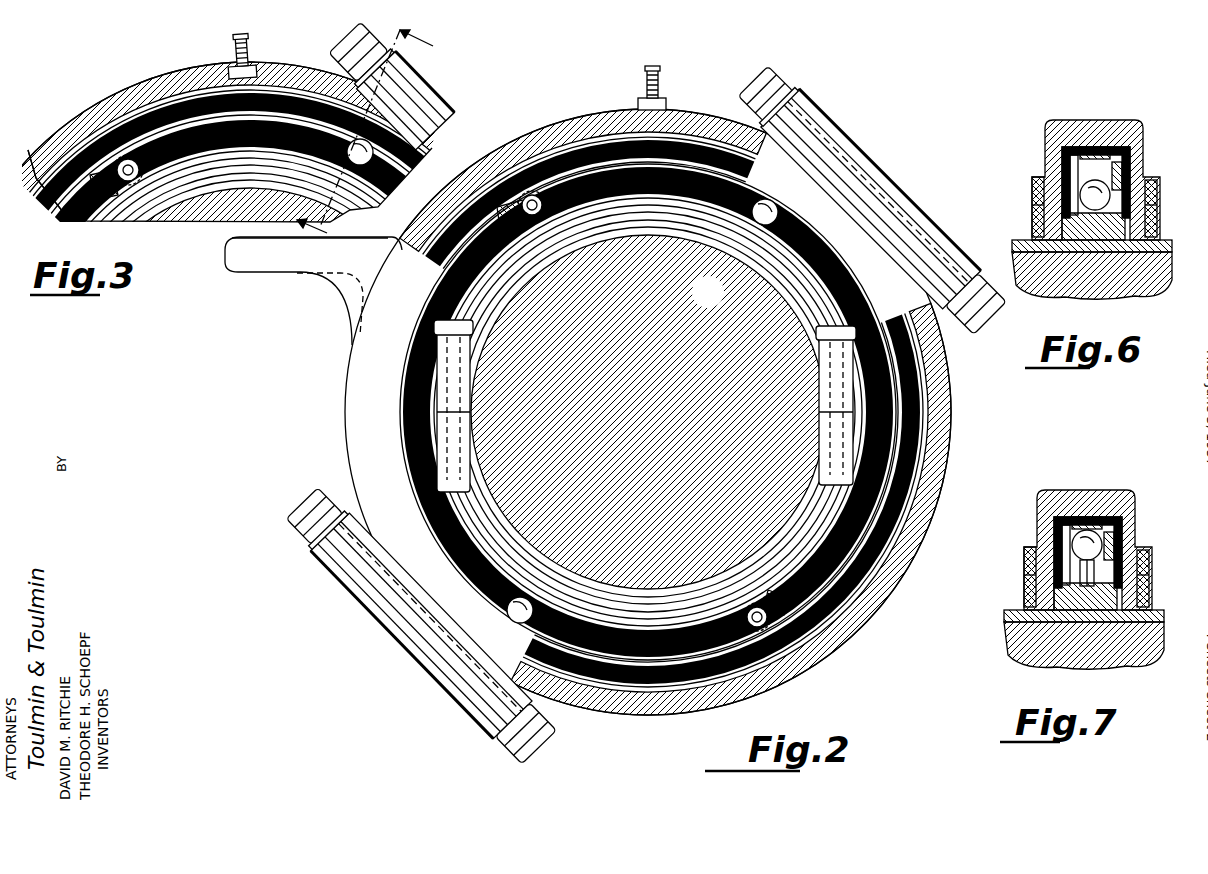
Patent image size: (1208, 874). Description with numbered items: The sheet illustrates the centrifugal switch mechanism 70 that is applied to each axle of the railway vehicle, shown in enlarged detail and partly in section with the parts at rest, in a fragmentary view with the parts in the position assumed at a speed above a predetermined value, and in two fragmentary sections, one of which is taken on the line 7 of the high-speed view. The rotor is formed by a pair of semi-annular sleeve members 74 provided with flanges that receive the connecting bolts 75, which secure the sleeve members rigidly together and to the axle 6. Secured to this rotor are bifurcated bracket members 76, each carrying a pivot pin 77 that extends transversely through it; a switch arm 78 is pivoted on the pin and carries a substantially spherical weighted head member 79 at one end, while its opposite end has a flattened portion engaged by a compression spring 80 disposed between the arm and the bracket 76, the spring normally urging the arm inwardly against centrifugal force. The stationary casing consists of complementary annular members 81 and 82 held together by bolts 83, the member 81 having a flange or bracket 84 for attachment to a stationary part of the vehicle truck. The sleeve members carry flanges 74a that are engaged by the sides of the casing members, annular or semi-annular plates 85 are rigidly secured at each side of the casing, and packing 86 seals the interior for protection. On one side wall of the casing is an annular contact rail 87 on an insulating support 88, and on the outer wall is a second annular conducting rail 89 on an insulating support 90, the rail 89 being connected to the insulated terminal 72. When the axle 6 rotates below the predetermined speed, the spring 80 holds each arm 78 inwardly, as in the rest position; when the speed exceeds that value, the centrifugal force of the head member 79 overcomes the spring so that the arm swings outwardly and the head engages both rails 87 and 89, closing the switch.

In FIG. 2, the axle 6 is at (724, 272).
In FIG. 3, the axle 6 is at (210, 220).
In FIG. 6, the axle 6 is at (1145, 290).
In FIG. 7, the axle 6 is at (1084, 659).
In FIG. 3, the section line 7— 7 is at (357, 124).
In FIG. 2, the centrifugal switch mechanism 70 is at (566, 108).
In FIG. 2, the terminal 72 is at (660, 86).
In FIG. 3, the terminal 72 is at (252, 50).
In FIG. 2, the semi-annular sleeve members 74 is at (880, 240).
In FIG. 3, the semi-annular sleeve members 74 is at (148, 200).
In FIG. 6, the semi-annular sleeve members 74 is at (1158, 243).
In FIG. 7, the semi-annular sleeve members 74 is at (1120, 594).
In FIG. 6, the flanges 74a is at (1040, 243).
In FIG. 7, the flanges 74a is at (1064, 622).
In FIG. 2, the connecting bolts 75 is at (436, 332).
In FIG. 2, the bifurcated bracket members 76 is at (477, 222).
In FIG. 3, the bifurcated bracket members 76 is at (85, 214).
In FIG. 2, the pivot pin 77 is at (520, 205).
In FIG. 3, the pivot pin 77 is at (128, 158).
In FIG. 2, the switch arm 78 is at (600, 180).
In FIG. 3, the switch arm 78 is at (190, 130).
In FIG. 7, the switch arm 78 is at (1036, 573).
In FIG. 2, the weighted head member 79 is at (760, 198).
In FIG. 3, the weighted head member 79 is at (380, 200).
In FIG. 6, the weighted head member 79 is at (1080, 185).
In FIG. 7, the weighted head member 79 is at (1052, 536).
In FIG. 2, the compression spring 80 is at (528, 198).
In FIG. 3, the compression spring 80 is at (115, 163).
In FIG. 2, the annular casing member 81 is at (360, 392).
In FIG. 3, the annular casing member 81 is at (64, 152).
In FIG. 6, the annular casing member 81 is at (1115, 120).
In FIG. 7, the annular casing member 81 is at (1088, 533).
In FIG. 2, the annular casing member 82 is at (608, 712).
In FIG. 3, the annular casing member 82 is at (145, 92).
In FIG. 2, the bolts 83 is at (790, 88).
In FIG. 3, the bolts 83 is at (372, 55).
In FIG. 2, the flange or bracket 84 is at (270, 273).
In FIG. 6, the annular plates 85 is at (1032, 200).
In FIG. 7, the annular plates 85 is at (1080, 579).
In FIG. 6, the packing 86 is at (1032, 218).
In FIG. 7, the packing 86 is at (1080, 581).
In FIG. 2, the annular contact rail 87 is at (890, 482).
In FIG. 3, the annular contact rail 87 is at (396, 176).
In FIG. 6, the annular contact rail 87 is at (1128, 170).
In FIG. 7, the annular contact rail 87 is at (1117, 545).
In FIG. 2, the insulating support 88 is at (905, 457).
In FIG. 3, the insulating support 88 is at (388, 188).
In FIG. 6, the insulating support 88 is at (1122, 185).
In FIG. 7, the insulating support 88 is at (1139, 545).
In FIG. 2, the annular conducting rail 89 is at (917, 427).
In FIG. 3, the annular conducting rail 89 is at (293, 88).
In FIG. 6, the annular conducting rail 89 is at (1128, 150).
In FIG. 7, the annular conducting rail 89 is at (1113, 523).
In FIG. 2, the insulating support 90 is at (922, 393).
In FIG. 3, the insulating support 90 is at (193, 137).
In FIG. 6, the insulating support 90 is at (1090, 150).
In FIG. 7, the insulating support 90 is at (1068, 493).